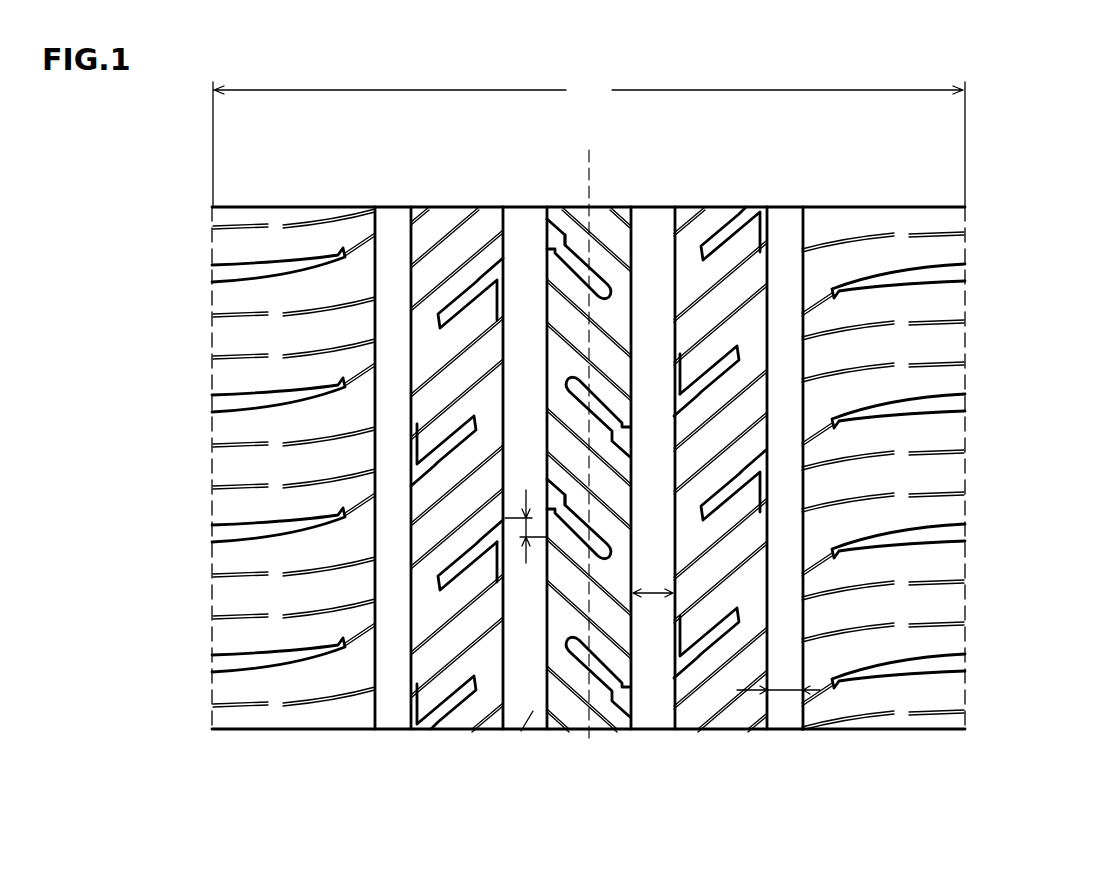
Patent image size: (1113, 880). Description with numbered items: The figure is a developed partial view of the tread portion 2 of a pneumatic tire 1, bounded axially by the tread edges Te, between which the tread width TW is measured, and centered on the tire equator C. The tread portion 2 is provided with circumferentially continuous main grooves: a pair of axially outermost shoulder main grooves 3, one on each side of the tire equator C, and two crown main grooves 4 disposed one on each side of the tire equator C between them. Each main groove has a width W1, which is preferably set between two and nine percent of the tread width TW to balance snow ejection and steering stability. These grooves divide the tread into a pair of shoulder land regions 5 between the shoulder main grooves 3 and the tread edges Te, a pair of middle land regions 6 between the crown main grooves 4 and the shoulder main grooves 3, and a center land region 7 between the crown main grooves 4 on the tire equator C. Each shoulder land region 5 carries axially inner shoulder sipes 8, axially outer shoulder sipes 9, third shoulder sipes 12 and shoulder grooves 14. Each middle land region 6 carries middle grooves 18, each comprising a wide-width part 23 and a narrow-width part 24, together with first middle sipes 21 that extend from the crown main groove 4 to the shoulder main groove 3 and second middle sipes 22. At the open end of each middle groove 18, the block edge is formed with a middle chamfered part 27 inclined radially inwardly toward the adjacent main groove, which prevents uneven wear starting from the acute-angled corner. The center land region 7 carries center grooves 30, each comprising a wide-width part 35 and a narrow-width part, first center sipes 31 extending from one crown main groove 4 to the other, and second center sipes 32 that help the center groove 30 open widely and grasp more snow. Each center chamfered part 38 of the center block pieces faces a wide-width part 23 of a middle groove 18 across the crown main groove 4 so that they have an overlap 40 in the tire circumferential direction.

The pneumatic tire 1 is at (1048, 125).
The tread portion 2 is at (983, 175).
The shoulder main groove 3 is at (797, 229).
The crown main groove 4 is at (660, 229).
The shoulder land region 5 is at (606, 473).
The middle land region 6 is at (598, 473).
The center land region 7 is at (592, 473).
The axially inner shoulder sipe 8 is at (855, 456).
The axially outer shoulder sipe 9 is at (935, 493).
The third shoulder sipe 12 is at (820, 430).
The shoulder groove 14 is at (880, 405).
The middle groove 18 is at (598, 506).
The first middle sipe 21 is at (700, 668).
The second middle sipe 22 is at (722, 612).
The wide-width part 23 is at (601, 481).
The narrow-width part 24 is at (690, 663).
The middle chamfered part 27 is at (681, 376).
The center groove 30 is at (592, 487).
The first center sipe 31 is at (633, 705).
The second center sipe 32 is at (530, 706).
The wide-width part 35 is at (573, 383).
The center chamfered part 38 is at (576, 603).
The overlap 40 is at (548, 497).
The tread width TW is at (589, 142).
The tire equator C is at (589, 422).
The tread edge Te is at (1007, 168).
The main groove width W1 is at (786, 695).